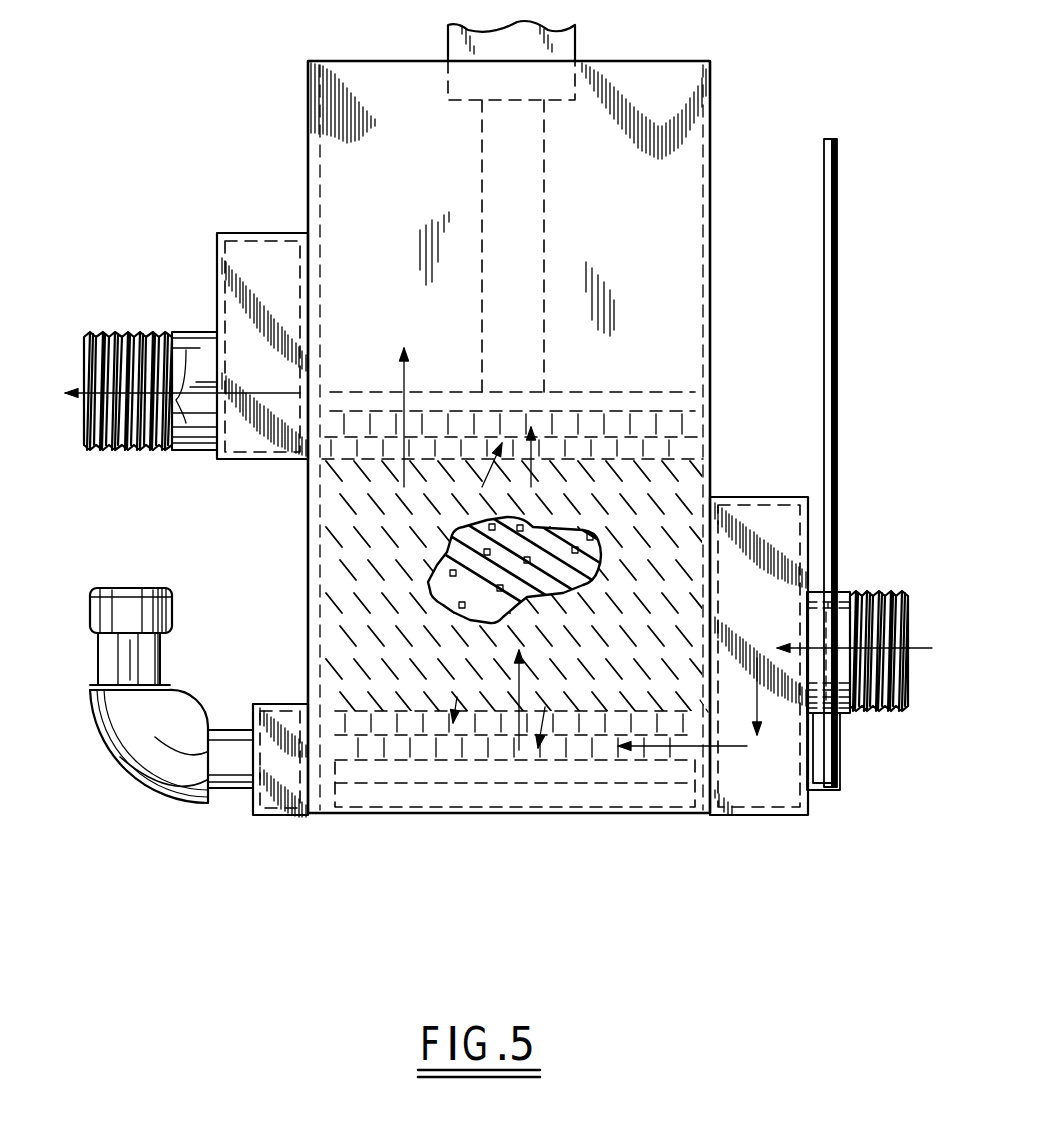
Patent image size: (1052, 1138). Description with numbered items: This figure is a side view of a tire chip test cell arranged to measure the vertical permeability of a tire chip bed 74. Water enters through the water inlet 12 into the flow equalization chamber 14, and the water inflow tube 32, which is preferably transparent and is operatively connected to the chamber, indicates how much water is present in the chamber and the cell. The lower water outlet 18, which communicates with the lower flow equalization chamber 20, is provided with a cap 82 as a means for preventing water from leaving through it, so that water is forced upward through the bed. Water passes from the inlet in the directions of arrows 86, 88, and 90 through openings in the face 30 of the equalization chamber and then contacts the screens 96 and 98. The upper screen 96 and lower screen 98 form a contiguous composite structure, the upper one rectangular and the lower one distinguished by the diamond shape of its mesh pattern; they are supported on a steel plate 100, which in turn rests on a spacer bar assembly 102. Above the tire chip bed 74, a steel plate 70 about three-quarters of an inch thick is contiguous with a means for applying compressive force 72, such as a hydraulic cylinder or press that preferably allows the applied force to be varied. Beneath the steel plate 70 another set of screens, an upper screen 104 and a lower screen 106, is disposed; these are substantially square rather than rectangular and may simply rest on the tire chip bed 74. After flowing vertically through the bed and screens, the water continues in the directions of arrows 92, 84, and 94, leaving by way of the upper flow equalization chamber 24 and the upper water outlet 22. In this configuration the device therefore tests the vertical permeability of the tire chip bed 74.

The water inlet 12 is at (887, 587).
The flow equalization chamber 14 is at (760, 820).
The lower water outlet 18 is at (157, 770).
The lower flow equalization chamber 20 is at (290, 780).
The upper water outlet 22 is at (93, 450).
The upper flow equalization chamber 24 is at (257, 452).
The face 30 is at (700, 700).
The water inflow tube 32 is at (837, 205).
The steel plate 70 is at (385, 392).
The means for applying compressive force 72 is at (544, 207).
The tire chip bed 74 is at (557, 570).
The cap 82 is at (172, 612).
The arrow 84 is at (920, 650).
The arrow 86 is at (757, 697).
The arrow 88 is at (747, 746).
The arrow 90 is at (519, 678).
The arrow 92 is at (404, 478).
The arrow 94 is at (182, 455).
The upper screen 96 is at (457, 697).
The lower screen 98 is at (545, 707).
The steel plate 100 is at (633, 777).
The spacer bar assembly 102 is at (556, 803).
The upper screen 104 is at (558, 468).
The lower screen 106 is at (471, 476).